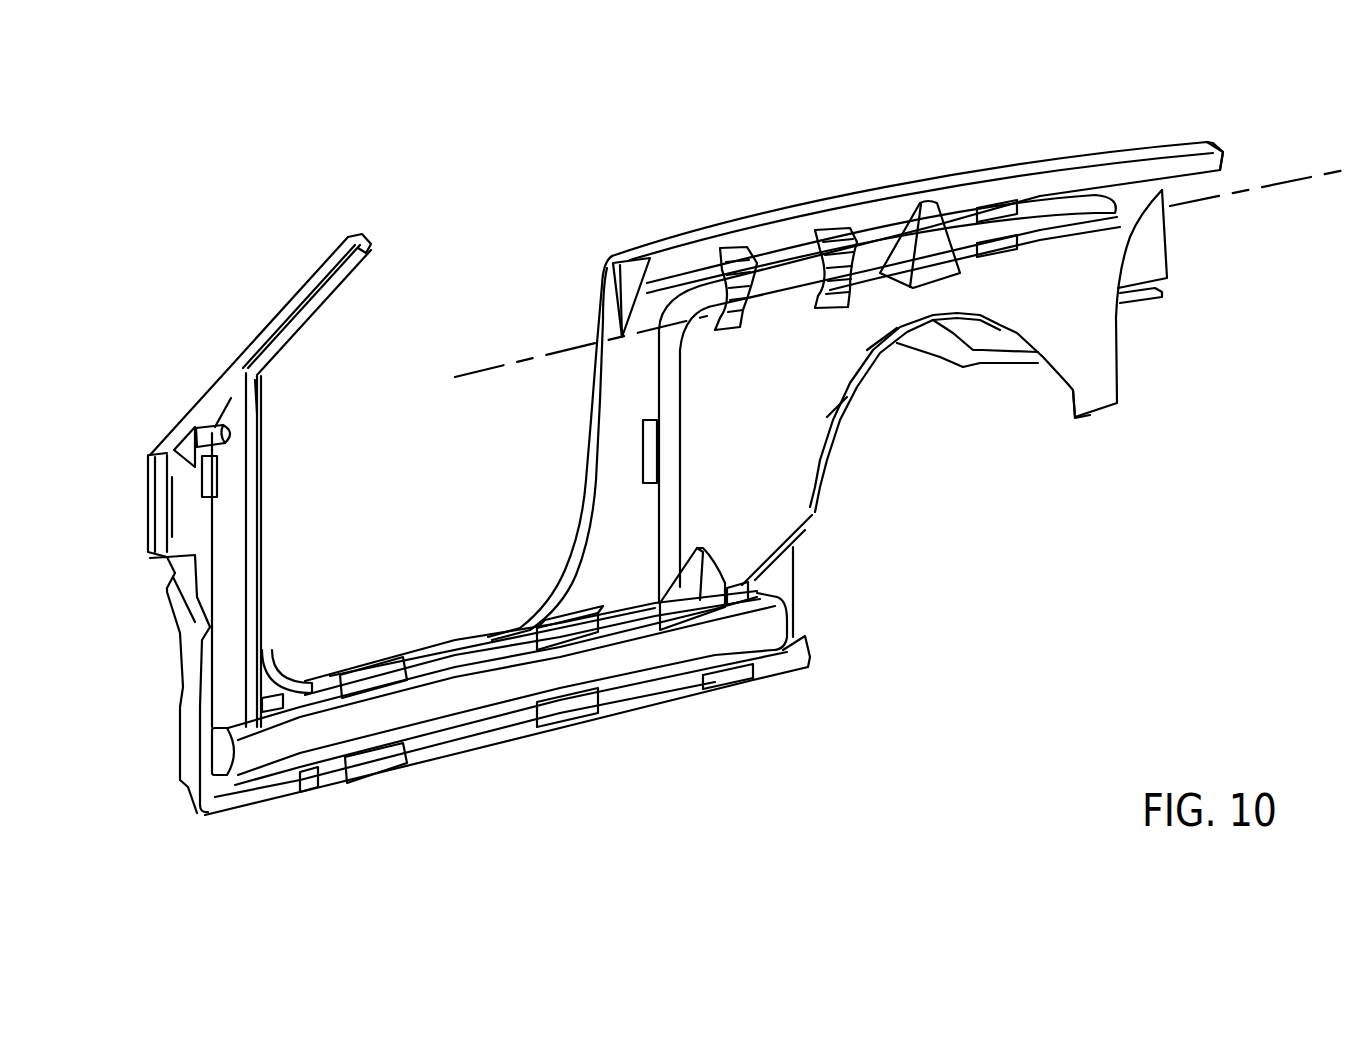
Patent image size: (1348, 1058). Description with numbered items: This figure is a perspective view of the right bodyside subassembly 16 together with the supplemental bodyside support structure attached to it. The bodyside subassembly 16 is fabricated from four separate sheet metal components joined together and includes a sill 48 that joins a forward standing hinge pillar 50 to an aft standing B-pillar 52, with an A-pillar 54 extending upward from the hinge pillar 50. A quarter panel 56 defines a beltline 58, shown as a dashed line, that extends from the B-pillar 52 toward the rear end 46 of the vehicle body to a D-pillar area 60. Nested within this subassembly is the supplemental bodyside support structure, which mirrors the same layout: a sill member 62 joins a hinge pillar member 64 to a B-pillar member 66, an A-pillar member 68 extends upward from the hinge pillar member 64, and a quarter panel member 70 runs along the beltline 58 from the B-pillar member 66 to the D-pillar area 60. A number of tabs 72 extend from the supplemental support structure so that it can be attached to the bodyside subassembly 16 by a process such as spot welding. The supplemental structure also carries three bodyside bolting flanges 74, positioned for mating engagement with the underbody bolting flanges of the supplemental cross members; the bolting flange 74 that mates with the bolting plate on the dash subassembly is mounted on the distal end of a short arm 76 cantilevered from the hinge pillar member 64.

The right bodyside subassembly 16 is at (1083, 333).
The rear end 46 is at (1198, 255).
The sill 48 is at (423, 760).
The hinge pillar 50 is at (193, 530).
The B-pillar 52 is at (617, 427).
The A-pillar 54 is at (285, 300).
The quarter panel 56 is at (780, 473).
The beltline 58 is at (1298, 172).
The D-pillar area 60 is at (1042, 275).
The sill member 62 is at (640, 663).
The hinge pillar member 64 is at (240, 585).
The B-pillar member 66 is at (663, 512).
The A-pillar member 68 is at (273, 330).
The quarter panel member 70 is at (793, 277).
The tabs 72 is at (553, 733).
The bodyside bolting flanges 74 is at (175, 455).
The short arm 76 is at (213, 433).